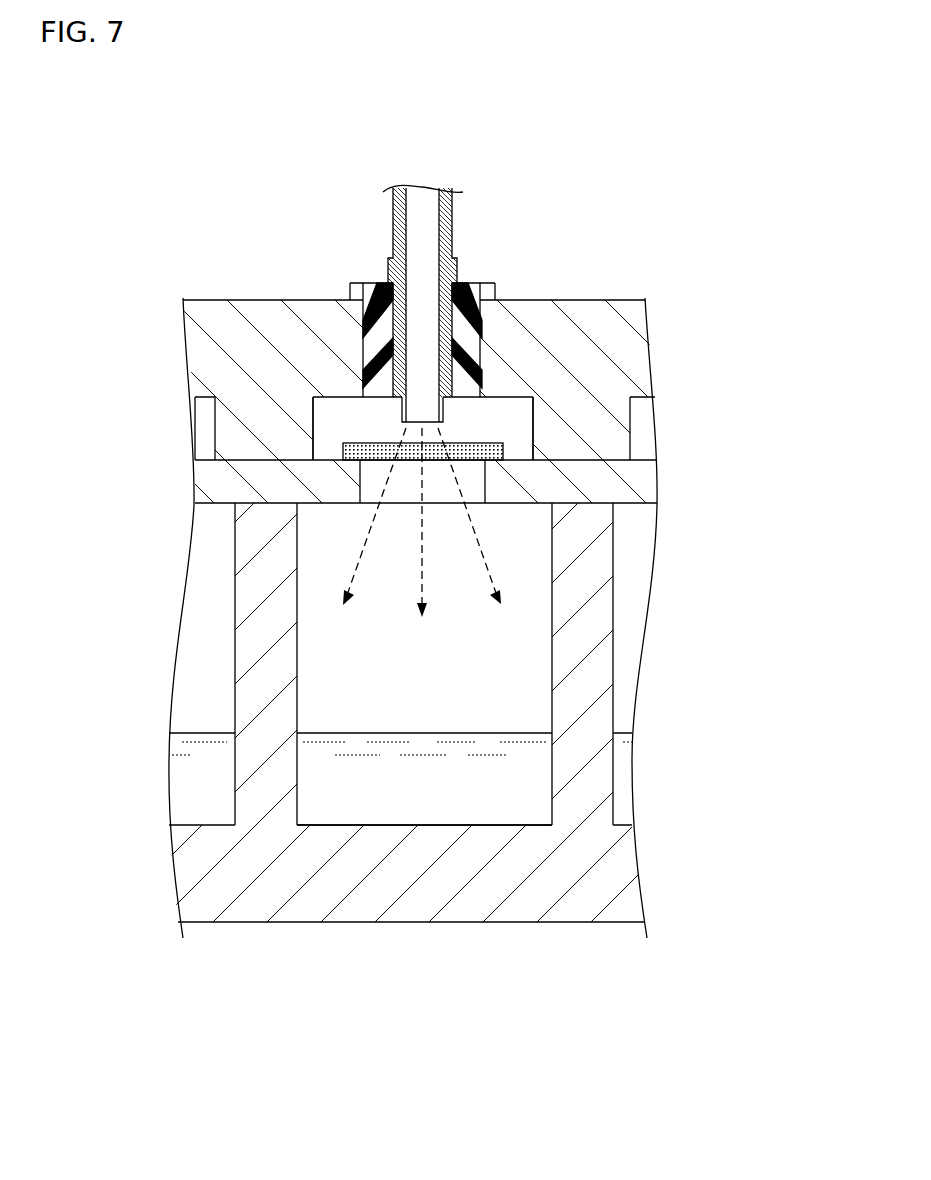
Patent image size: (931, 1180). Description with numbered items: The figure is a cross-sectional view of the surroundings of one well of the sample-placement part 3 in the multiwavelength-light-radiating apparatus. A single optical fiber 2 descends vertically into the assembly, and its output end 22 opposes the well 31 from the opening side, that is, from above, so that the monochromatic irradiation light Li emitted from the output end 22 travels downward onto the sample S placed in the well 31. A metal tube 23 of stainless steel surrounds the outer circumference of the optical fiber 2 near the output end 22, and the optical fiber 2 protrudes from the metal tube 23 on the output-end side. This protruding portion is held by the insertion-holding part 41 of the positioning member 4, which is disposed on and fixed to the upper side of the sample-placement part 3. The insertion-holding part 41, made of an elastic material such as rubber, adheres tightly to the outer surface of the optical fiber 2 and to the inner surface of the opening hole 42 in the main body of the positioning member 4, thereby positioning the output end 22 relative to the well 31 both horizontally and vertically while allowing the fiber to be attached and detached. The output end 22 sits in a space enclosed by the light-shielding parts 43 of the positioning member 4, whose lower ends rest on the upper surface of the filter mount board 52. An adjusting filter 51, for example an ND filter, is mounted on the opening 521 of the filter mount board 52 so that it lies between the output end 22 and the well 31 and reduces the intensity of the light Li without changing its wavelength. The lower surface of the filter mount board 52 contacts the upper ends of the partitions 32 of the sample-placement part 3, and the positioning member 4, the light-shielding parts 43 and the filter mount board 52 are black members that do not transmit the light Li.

The optical fiber 2 is at (423, 213).
The metal tube 23 is at (391, 223).
The output end 22 is at (438, 432).
The sample-placement part 3 is at (255, 893).
The well 31 is at (510, 700).
The partition 32 is at (252, 653).
The positioning member 4 is at (211, 320).
The insertion-holding part 41 is at (365, 281).
The opening hole 42 is at (477, 312).
The light-shielding part 43 is at (240, 433).
The adjusting filter 51 is at (375, 468).
The filter mount board 52 is at (637, 474).
The opening 521 is at (472, 490).
The sample S is at (397, 787).
The monochromatic irradiation light Li is at (450, 612).